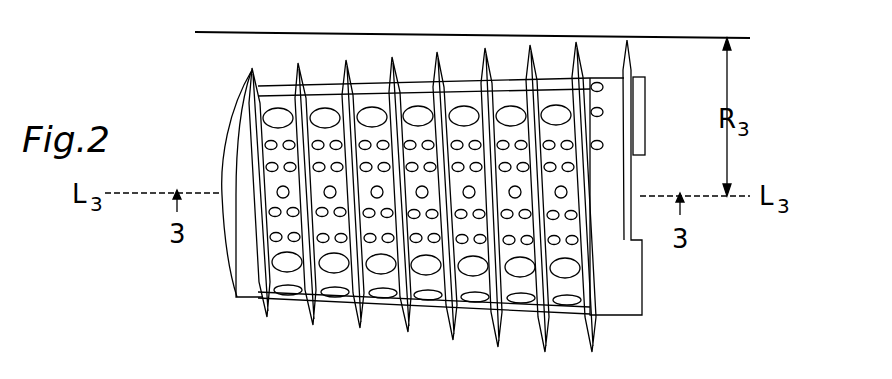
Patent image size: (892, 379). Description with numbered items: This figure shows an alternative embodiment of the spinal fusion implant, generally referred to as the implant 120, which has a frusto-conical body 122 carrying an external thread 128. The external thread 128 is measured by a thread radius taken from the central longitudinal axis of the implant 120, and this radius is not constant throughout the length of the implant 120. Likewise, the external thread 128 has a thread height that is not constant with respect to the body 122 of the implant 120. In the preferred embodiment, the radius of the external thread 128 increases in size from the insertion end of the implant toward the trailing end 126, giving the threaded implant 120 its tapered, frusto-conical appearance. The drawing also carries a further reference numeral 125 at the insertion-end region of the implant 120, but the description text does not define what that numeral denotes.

The implant 120 is at (222, 93).
The body 122 is at (381, 303).
The end cap 125 is at (225, 272).
The trailing end 126 is at (642, 297).
The external thread 128 is at (263, 302).